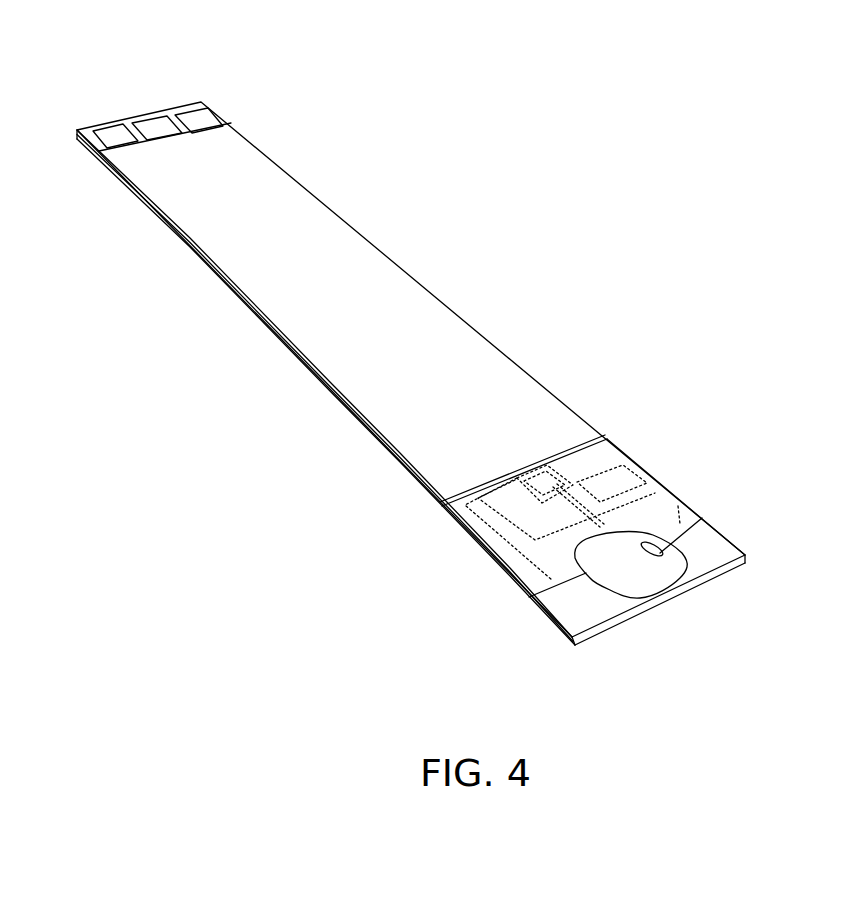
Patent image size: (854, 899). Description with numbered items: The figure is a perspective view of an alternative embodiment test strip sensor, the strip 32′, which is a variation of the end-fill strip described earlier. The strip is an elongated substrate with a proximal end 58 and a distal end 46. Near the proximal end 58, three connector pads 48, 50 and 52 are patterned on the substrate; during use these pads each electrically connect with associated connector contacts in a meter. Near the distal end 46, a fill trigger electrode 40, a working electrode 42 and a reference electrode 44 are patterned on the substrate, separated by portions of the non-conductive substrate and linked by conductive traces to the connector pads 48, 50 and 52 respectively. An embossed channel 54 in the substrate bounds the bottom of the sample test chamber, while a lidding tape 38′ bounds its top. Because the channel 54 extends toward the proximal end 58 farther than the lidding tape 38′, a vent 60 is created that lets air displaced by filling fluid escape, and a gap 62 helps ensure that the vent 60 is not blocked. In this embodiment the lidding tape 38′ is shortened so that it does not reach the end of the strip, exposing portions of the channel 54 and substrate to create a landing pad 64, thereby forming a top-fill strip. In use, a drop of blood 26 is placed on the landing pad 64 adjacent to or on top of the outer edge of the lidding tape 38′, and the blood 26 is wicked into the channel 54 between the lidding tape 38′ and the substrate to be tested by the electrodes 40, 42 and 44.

The strip 32′ is at (331, 99).
The proximal end 58 is at (105, 207).
The connector pad 52 is at (108, 137).
The connector pad 50 is at (145, 128).
The connector pad 48 is at (201, 118).
The lidding tape 38′ is at (690, 513).
The gap 62 is at (472, 496).
The distal end 46 is at (689, 437).
The reference electrode 44 is at (548, 553).
The vent 60 is at (531, 474).
The fill trigger electrode 40 is at (548, 482).
The working electrode 42 is at (625, 478).
The drop of blood 26 is at (660, 577).
The landing pad 64 is at (600, 603).
The channel 54 is at (664, 600).